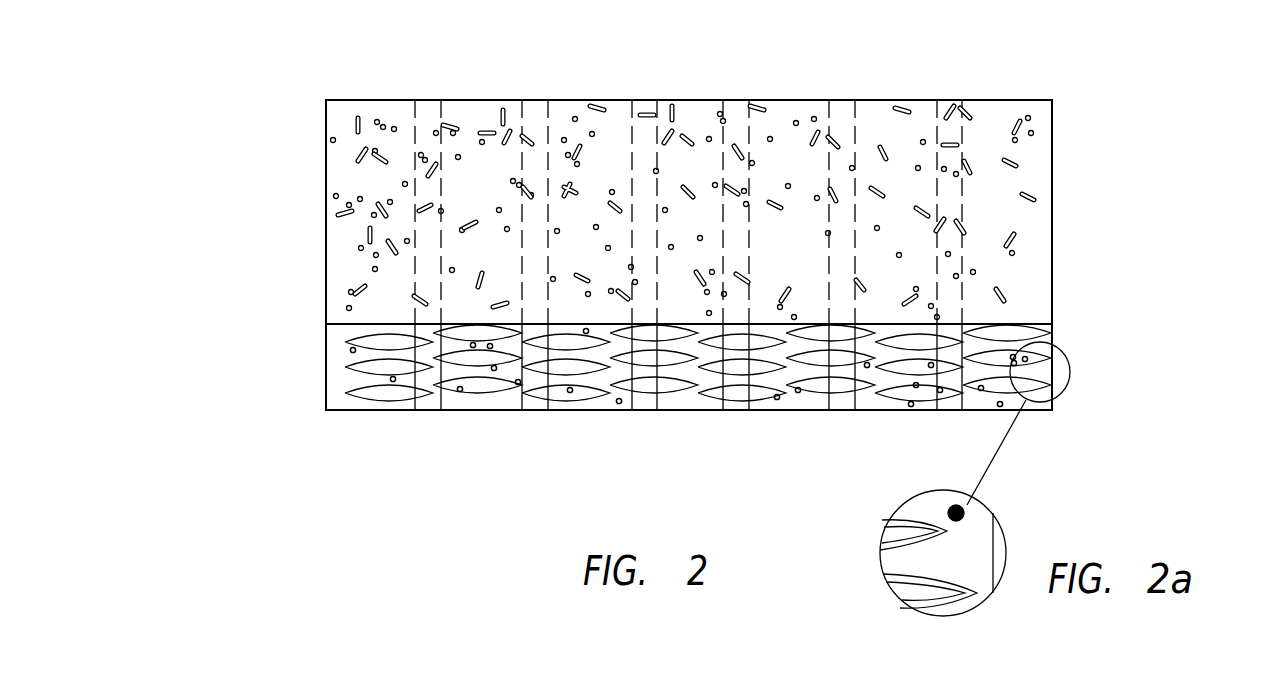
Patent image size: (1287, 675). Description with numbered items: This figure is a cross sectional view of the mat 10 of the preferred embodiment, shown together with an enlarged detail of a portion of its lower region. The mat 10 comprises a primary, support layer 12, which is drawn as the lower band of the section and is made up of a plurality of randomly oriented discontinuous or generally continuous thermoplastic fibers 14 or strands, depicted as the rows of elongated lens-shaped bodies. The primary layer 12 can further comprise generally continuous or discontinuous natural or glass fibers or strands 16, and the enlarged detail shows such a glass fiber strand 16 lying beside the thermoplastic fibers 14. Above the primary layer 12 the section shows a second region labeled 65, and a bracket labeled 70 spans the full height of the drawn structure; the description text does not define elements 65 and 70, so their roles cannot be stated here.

In FIG. 2, the mat 10 is at (292, 519).
In FIG. 2, the primary support layer 12 is at (327, 331).
In FIG. 2, the thermoplastic fibers 14 is at (387, 402).
In FIG. 2A, the thermoplastic fibers 14 is at (973, 512).
In FIG. 2A, the glass fibers or strands 16 is at (965, 508).
In FIG. 2, the thermoplastic matrix layer 65 is at (952, 132).
In FIG. 2, the composite laminate 70 is at (1057, 100).